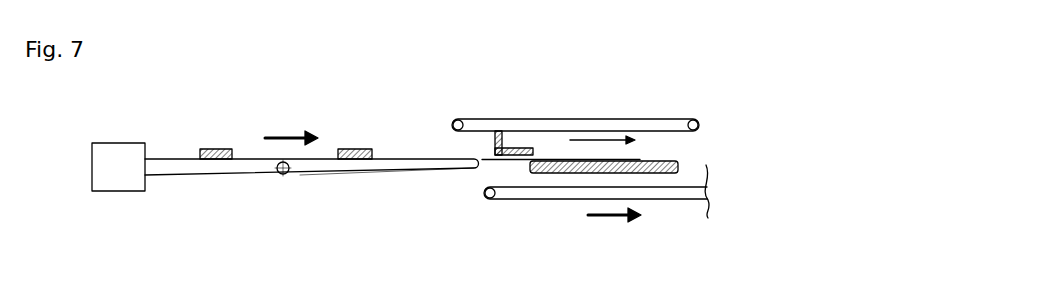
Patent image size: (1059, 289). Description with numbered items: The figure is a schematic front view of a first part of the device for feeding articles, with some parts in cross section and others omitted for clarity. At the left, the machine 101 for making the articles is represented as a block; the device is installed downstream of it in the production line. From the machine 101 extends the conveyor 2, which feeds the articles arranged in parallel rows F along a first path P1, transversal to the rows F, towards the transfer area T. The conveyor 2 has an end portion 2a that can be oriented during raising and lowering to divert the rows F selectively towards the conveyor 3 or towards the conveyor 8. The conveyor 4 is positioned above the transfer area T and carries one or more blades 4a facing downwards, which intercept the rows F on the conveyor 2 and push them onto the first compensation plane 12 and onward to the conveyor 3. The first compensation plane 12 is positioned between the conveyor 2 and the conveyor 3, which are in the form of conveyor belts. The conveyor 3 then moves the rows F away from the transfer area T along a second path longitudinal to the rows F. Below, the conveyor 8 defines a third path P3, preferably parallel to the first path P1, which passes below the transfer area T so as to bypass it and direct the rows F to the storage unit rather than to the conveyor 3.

The machine 101 is at (100, 174).
The conveyor 2 is at (174, 181).
The end portion 2a is at (388, 174).
The first compensation plane 12 is at (497, 176).
The blade 4a is at (477, 144).
The conveyor 4 is at (706, 117).
The conveyor 3 is at (681, 165).
The conveyor 8 is at (548, 202).
The row F is at (216, 149).
The transfer area T is at (630, 101).
The first path P1 is at (291, 123).
The third path P3 is at (614, 231).